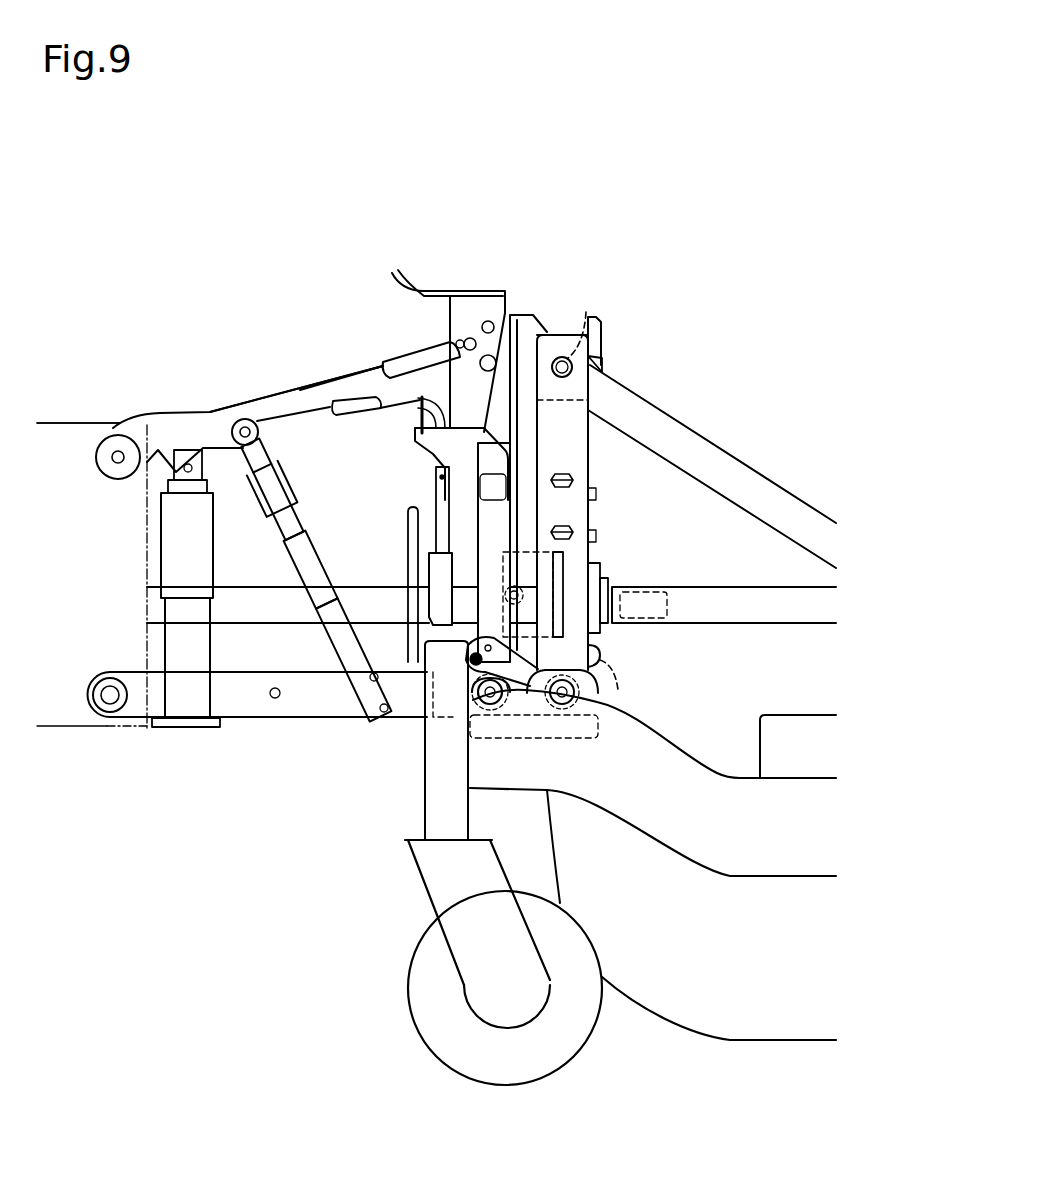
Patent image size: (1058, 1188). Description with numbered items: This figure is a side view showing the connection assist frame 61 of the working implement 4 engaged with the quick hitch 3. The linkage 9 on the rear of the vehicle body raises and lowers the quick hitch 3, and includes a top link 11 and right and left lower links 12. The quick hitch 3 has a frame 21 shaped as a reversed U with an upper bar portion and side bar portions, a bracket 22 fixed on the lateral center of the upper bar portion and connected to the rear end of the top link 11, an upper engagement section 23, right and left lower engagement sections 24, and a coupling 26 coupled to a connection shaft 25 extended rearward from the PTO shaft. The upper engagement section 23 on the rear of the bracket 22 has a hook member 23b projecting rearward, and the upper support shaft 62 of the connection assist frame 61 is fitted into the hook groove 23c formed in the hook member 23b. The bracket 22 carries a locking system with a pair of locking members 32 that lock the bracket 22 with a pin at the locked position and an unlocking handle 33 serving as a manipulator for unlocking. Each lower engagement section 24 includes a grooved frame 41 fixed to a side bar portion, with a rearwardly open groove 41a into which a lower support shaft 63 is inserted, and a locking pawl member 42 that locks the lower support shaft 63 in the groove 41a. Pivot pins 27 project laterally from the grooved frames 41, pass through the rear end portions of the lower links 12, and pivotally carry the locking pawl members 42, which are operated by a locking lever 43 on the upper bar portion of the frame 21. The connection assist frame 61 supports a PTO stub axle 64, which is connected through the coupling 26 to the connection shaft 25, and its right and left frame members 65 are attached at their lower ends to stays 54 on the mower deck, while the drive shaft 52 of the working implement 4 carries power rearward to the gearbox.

The quick hitch 3 is at (325, 300).
The working implement 4 is at (759, 411).
The linkage 9 is at (229, 336).
The top link 11 is at (297, 396).
The lower link 12 is at (303, 675).
The frame 21 is at (450, 533).
The bracket 22 is at (385, 372).
The upper engagement section 23 is at (620, 366).
The hook member 23b is at (597, 327).
The hook groove 23c is at (575, 355).
The lower engagement section 24 is at (673, 693).
The connection shaft 25 is at (244, 588).
The coupling 26 is at (405, 580).
The pivot pin 27 is at (466, 684).
The locking member 32 is at (450, 342).
The unlocking handle 33 is at (467, 295).
The grooved frame 41 is at (597, 653).
The groove 41a is at (612, 670).
The locking pawl member 42 is at (597, 703).
The locking lever 43 is at (357, 413).
The drive shaft 52 is at (735, 590).
The stay 54 is at (520, 700).
The connection assist frame 61 is at (661, 285).
The upper support shaft 62 is at (562, 356).
The lower support shaft 63 is at (600, 692).
The PTO stub axle 64 is at (646, 590).
The frame member 65 is at (590, 478).